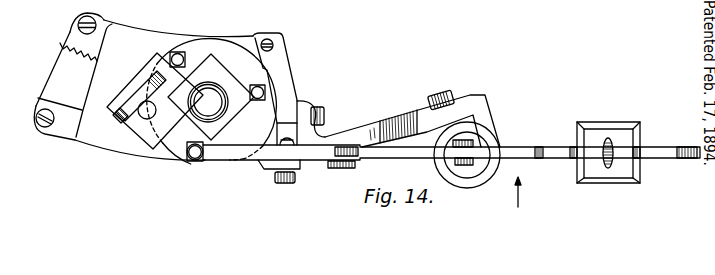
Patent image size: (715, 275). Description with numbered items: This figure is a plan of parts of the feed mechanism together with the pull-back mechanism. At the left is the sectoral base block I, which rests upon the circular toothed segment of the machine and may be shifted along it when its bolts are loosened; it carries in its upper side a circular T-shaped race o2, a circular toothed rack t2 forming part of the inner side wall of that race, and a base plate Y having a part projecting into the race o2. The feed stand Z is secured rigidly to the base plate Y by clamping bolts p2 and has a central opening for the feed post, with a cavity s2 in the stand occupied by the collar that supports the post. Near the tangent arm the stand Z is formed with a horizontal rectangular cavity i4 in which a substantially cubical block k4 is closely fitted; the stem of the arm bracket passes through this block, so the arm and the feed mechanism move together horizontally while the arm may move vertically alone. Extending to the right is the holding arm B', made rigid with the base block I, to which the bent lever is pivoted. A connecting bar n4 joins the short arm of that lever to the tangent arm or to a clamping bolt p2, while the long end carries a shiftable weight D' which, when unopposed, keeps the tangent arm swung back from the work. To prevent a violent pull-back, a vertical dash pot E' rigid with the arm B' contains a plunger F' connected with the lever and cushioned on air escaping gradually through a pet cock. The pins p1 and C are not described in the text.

The base plate Y is at (186, 92).
The race o2 is at (70, 61).
The circular toothed rack t2 is at (79, 26).
The base block I is at (69, 132).
The horizontal rectangular cavity i4 is at (155, 101).
The cubical block k4 is at (119, 121).
The feed stand Z is at (211, 96).
The cavity s2 is at (208, 121).
The clamping bolts p2 is at (186, 58).
The pin p1 is at (183, 143).
The rod C is at (681, 151).
The connecting bar n4 is at (258, 157).
The holding arm B' is at (398, 118).
The dash pot E' is at (470, 163).
The plunger F' is at (484, 139).
The shiftable weight D' is at (608, 136).